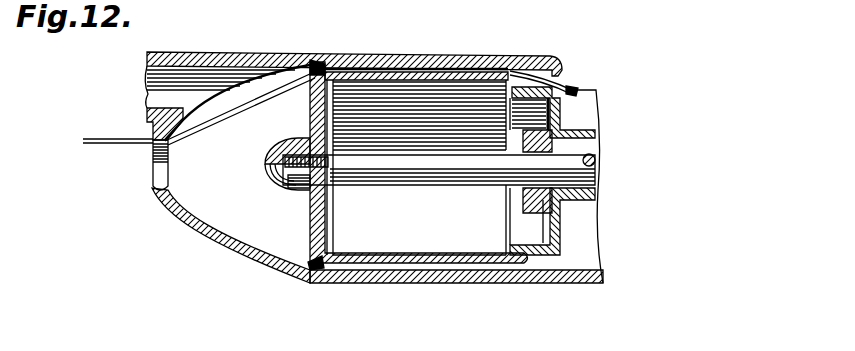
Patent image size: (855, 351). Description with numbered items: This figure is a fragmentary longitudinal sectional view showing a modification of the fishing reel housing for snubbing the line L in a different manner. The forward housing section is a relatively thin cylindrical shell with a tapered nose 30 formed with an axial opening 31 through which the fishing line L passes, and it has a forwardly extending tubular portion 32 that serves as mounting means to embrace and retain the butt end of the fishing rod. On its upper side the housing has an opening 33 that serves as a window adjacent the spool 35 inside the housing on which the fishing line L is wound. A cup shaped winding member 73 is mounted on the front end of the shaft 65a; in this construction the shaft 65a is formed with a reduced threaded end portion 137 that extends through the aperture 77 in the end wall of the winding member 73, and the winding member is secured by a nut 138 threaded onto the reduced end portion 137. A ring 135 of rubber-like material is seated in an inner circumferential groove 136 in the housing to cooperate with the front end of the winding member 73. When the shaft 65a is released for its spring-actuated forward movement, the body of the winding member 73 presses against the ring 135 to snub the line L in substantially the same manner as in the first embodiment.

The tapered nose 30 is at (163, 208).
The axial opening 31 is at (158, 182).
The forwardly extending tubular portion 32 is at (152, 52).
The opening 33 is at (573, 87).
The spool 35 is at (585, 131).
The shaft 65a is at (419, 184).
The cup shaped winding member 73 is at (437, 271).
The aperture 77 is at (337, 173).
The ring 135 is at (310, 258).
The inner circumferential groove 136 is at (308, 283).
The reduced threaded end portion 137 is at (297, 142).
The nut 138 is at (286, 189).
The fishing line L is at (92, 145).